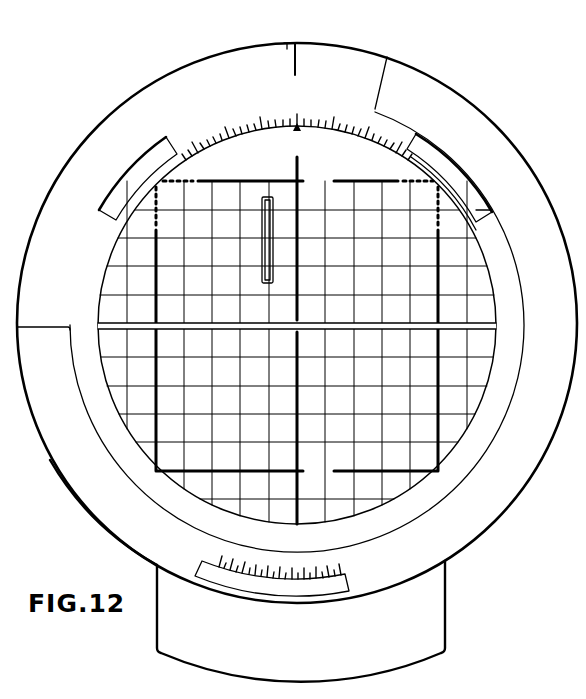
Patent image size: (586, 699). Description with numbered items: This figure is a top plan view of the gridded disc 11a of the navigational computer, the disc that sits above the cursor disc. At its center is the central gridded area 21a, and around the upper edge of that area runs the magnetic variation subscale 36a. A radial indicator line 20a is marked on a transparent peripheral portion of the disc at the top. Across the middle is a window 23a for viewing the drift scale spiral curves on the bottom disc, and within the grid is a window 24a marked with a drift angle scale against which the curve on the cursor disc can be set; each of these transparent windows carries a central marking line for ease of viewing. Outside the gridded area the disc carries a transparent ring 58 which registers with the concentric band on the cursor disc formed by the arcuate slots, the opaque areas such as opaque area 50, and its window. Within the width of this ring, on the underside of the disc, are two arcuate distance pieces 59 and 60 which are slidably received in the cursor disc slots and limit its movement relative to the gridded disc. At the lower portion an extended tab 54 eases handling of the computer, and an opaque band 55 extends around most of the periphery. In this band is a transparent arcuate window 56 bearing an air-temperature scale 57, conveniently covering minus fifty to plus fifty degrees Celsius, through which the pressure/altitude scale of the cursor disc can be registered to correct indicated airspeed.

The gridded disc 11a is at (118, 107).
The radial indicator line 20a is at (297, 63).
The central gridded area 21a is at (400, 200).
The window 23a is at (480, 317).
The window marked with a drift angle scale 24a is at (262, 226).
The magnetic variation subscale 36a is at (340, 130).
The opaque area 50 is at (297, 340).
The extended tab 54 is at (447, 612).
The opaque band 55 is at (122, 554).
The transparent arcuate window 56 is at (216, 578).
The air-temperature scale 57 is at (342, 572).
The transparent ring 58 is at (485, 397).
The arcuate distance piece 59 is at (119, 200).
The arcuate distance piece 60 is at (483, 211).